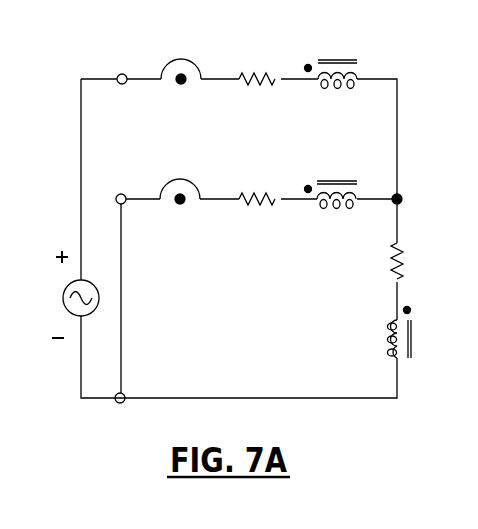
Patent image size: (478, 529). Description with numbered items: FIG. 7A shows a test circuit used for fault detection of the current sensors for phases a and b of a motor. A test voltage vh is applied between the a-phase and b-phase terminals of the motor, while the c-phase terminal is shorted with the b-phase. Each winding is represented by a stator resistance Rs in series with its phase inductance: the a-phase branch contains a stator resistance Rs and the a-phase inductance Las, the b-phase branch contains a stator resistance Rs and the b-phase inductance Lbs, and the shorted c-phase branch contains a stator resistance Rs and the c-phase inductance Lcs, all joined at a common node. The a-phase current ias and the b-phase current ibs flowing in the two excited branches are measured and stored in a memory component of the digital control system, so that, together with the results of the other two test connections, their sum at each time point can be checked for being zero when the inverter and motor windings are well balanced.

The stator resistance Rs is at (342, 149).
The a-phase stator inductance Las is at (331, 53).
The b-phase stator inductance Lbs is at (331, 174).
The c-phase stator inductance Lcs is at (420, 335).
The a-phase current ias is at (181, 84).
The b-phase current ibs is at (180, 204).
The test voltage vh is at (63, 294).